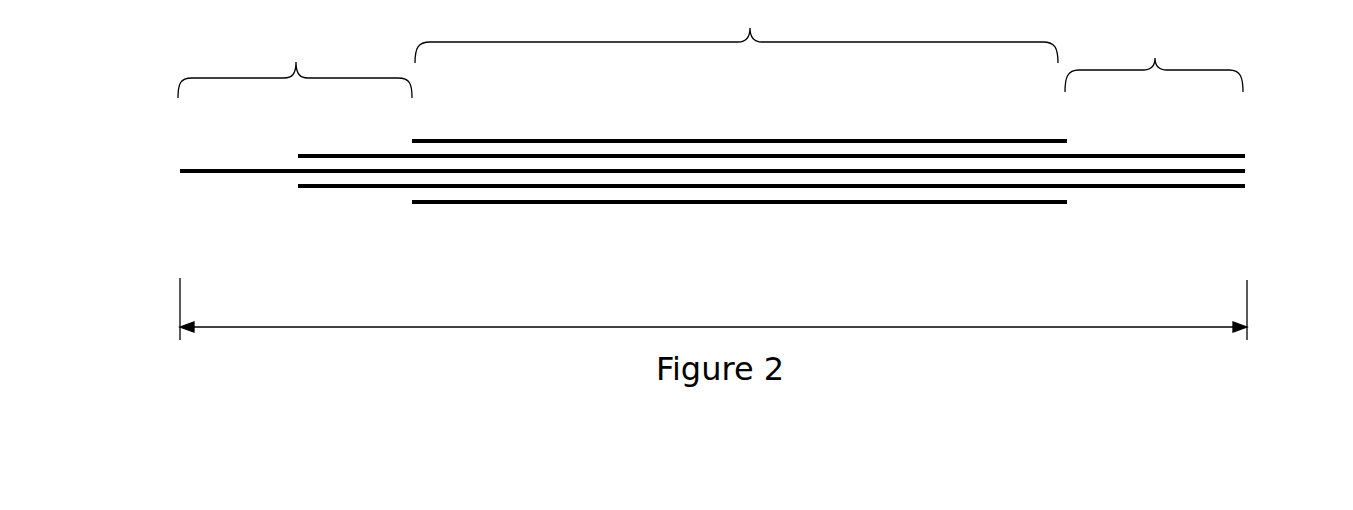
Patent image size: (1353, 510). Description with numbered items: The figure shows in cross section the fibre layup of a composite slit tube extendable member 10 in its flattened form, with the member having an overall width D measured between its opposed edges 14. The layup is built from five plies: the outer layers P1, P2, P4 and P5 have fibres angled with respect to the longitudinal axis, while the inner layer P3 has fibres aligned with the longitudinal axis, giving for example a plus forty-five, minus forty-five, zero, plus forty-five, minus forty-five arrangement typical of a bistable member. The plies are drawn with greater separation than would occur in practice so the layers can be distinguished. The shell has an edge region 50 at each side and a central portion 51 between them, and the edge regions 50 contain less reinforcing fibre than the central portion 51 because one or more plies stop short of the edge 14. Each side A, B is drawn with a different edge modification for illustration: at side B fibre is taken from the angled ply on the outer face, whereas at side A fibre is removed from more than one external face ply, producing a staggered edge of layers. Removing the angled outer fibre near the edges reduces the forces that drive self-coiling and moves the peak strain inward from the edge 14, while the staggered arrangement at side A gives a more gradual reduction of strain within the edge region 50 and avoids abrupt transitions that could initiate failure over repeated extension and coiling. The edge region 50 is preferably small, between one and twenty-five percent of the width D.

The component 10 is at (1336, 98).
The edge 14 is at (180, 185).
The edge region 50 is at (710, 65).
The central portion 51 is at (736, 31).
The outer layer P1 is at (485, 139).
The outer layer P2 is at (582, 154).
The inner layer P3 is at (688, 170).
The outer layer P4 is at (800, 185).
The outer layer P5 is at (826, 204).
The side A of the member A is at (258, 200).
The side B of the member B is at (1110, 216).
The width D is at (713, 309).